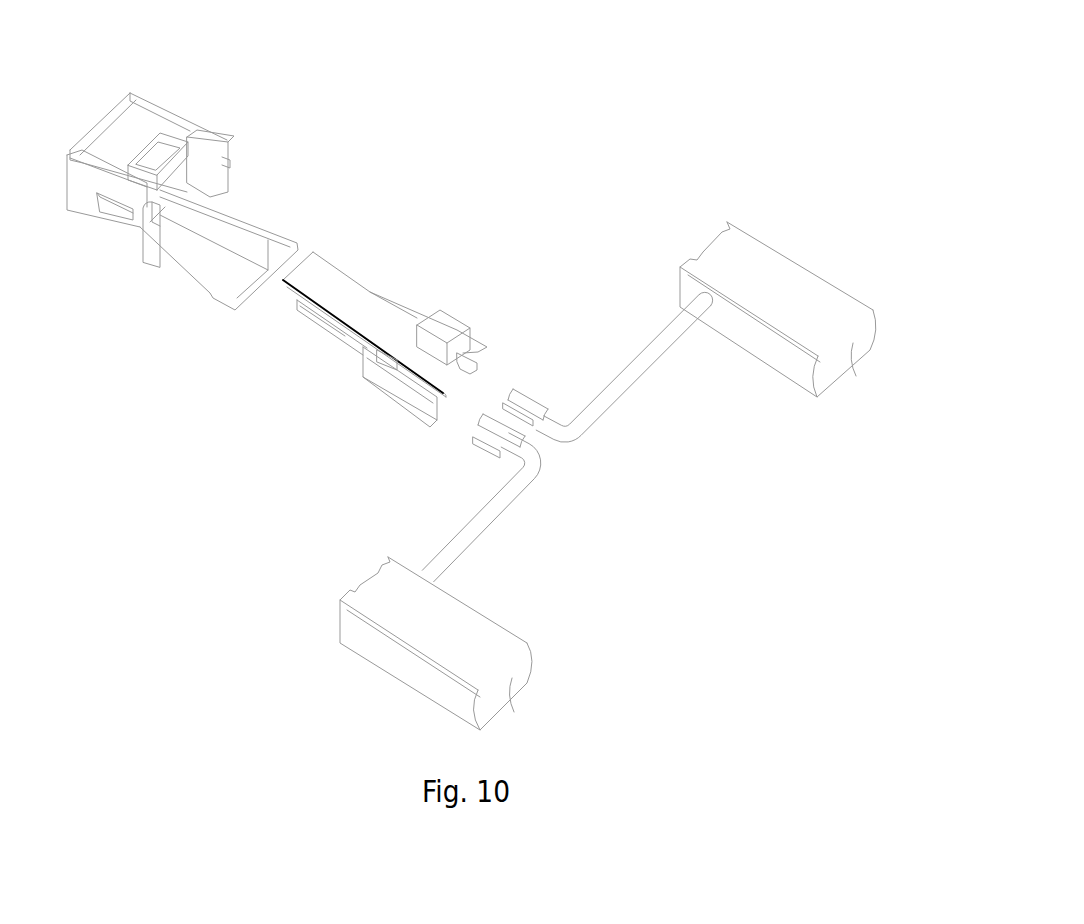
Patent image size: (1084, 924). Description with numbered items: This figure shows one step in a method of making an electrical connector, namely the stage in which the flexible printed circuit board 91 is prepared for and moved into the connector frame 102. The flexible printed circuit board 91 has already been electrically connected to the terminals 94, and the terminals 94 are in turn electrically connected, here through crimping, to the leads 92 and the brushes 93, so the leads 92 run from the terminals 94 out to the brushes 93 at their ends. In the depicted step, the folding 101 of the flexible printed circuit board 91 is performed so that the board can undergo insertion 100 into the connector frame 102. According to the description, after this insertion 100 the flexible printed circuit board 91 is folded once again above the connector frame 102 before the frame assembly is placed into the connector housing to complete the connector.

The flexible printed circuit board 91 is at (333, 260).
The leads 92 is at (632, 362).
The brushes 93 is at (745, 228).
The terminals 94 is at (378, 387).
The insertion 100 is at (275, 295).
The folding 101 is at (487, 348).
The connector frame 102 is at (192, 123).